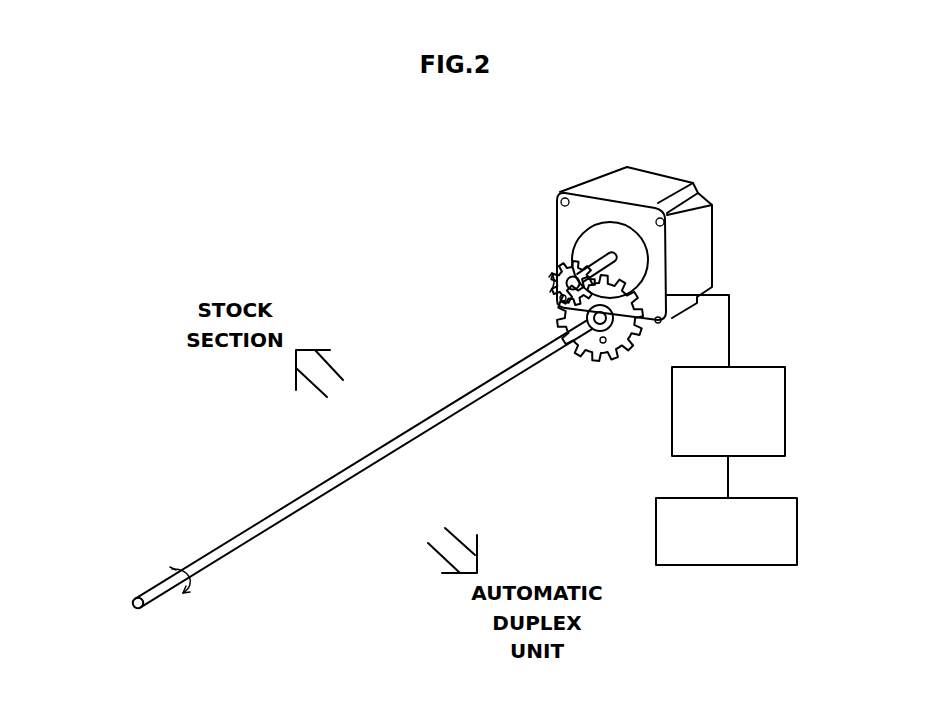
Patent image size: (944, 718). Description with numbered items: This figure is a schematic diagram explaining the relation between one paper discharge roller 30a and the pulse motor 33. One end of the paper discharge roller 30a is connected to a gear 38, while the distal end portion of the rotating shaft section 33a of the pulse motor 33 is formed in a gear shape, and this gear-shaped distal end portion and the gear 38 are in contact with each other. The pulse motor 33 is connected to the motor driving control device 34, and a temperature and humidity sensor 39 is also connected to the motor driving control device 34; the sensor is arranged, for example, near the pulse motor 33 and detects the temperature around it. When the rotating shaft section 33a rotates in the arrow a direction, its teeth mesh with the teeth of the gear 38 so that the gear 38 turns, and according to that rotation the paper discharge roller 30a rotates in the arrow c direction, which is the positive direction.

The pulse motor 33 is at (713, 240).
The rotating shaft section 33a is at (572, 267).
The gear 38 is at (648, 322).
The paper discharge roller 30a is at (350, 477).
The motor driving control device 34 is at (672, 418).
The temperature and humidity sensor 39 is at (656, 535).
The arrow a direction a is at (544, 281).
The arrow c direction c is at (180, 588).